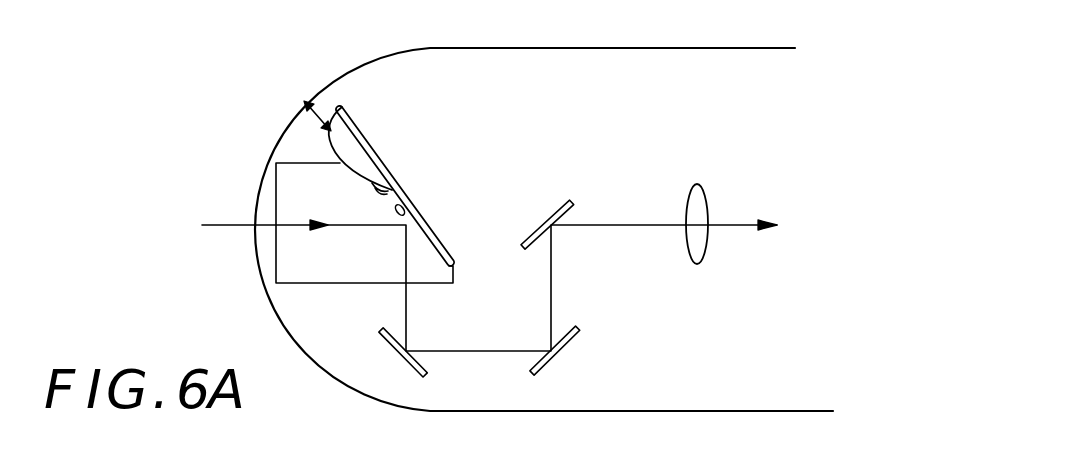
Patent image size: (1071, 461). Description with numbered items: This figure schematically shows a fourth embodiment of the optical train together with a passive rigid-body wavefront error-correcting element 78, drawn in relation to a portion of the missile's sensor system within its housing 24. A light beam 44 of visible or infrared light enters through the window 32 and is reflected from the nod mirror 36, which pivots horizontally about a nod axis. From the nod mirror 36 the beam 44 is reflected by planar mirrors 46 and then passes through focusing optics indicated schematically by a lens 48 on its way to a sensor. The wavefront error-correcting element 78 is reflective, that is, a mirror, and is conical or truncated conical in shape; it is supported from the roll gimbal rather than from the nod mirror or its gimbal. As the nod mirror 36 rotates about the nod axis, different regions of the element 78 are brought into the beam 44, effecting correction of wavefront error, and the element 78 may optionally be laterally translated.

The housing 24 is at (665, 48).
The gap between housing and mirror 32 is at (310, 88).
The light source module 36 is at (330, 283).
The light beam 44 is at (207, 225).
The mirrors 46 is at (552, 210).
The lens 48 is at (707, 250).
The tiltable mirror 78 is at (365, 137).